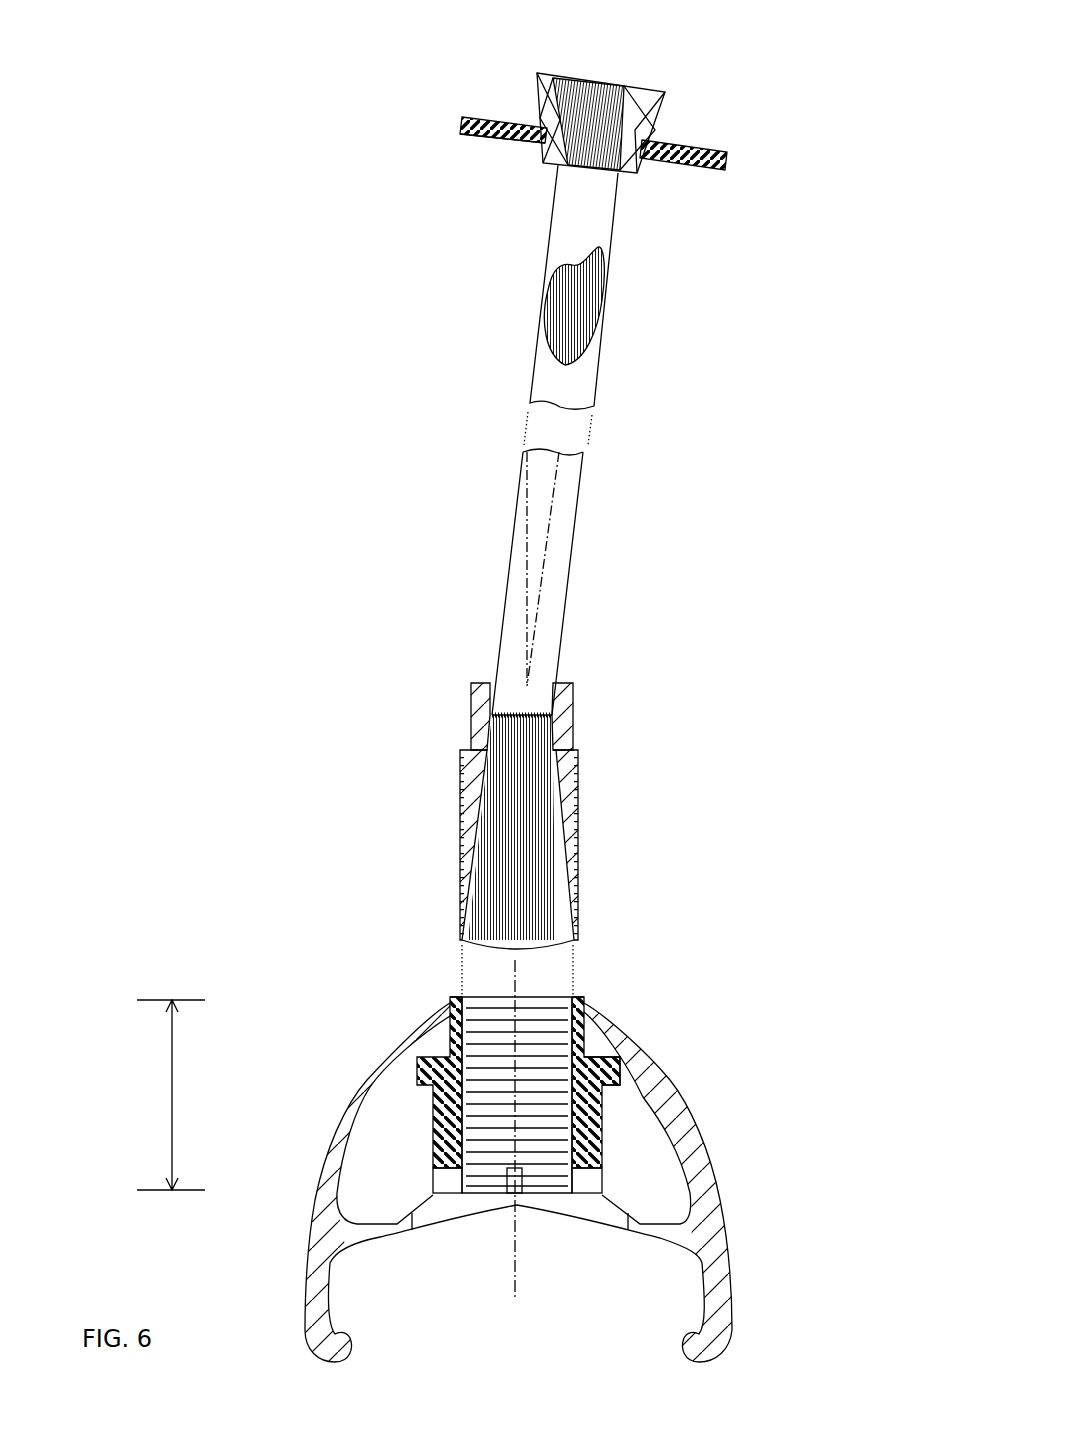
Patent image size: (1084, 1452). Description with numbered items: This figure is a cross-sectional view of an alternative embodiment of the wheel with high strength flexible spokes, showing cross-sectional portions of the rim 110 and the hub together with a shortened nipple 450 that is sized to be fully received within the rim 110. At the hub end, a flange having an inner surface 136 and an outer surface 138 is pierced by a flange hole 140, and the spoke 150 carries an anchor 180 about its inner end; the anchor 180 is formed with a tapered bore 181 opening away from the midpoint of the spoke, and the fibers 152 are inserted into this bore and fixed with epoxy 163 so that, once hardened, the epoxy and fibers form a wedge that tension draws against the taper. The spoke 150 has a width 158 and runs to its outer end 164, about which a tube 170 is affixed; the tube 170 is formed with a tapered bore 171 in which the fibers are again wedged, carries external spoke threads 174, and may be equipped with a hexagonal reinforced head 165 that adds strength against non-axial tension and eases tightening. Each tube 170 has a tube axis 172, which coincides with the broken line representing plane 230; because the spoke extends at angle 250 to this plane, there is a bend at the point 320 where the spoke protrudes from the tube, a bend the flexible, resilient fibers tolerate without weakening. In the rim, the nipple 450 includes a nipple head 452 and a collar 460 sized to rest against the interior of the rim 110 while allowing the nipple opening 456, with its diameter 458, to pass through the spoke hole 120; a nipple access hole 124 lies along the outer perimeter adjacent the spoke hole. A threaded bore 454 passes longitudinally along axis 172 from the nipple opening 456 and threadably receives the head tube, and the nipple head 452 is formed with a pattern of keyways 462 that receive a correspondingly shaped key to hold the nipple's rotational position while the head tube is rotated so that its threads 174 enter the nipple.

The rim 110 is at (714, 1237).
The spoke hole 120 is at (450, 1023).
The nipple access hole 124 is at (623, 1227).
The inner surface 136 is at (476, 116).
The outer surface 138 is at (500, 140).
The flange hole 140 is at (537, 140).
The spoke 150 is at (455, 320).
The fibers 152 is at (523, 795).
The width 158 is at (572, 630).
The epoxy 163 is at (613, 82).
The outer end 164 is at (495, 698).
The reinforced head 165 is at (468, 730).
The tube 170 is at (465, 860).
The tapered bore 171 is at (550, 805).
The tube axis 172 is at (512, 1248).
The external spoke threads 174 is at (578, 862).
The anchor 180 is at (648, 133).
The tapered bore 181 is at (538, 100).
The plane 230 is at (545, 538).
The angle 250 is at (640, 478).
The point 320 is at (556, 678).
The shortened nipple 450 is at (670, 1027).
The nipple head 452 is at (607, 1142).
The threaded bore 454 is at (171, 1080).
The nipple opening 456 is at (458, 990).
The diameter 458 is at (680, 1000).
The collar 460 is at (620, 1068).
The keyway 462 is at (430, 1177).